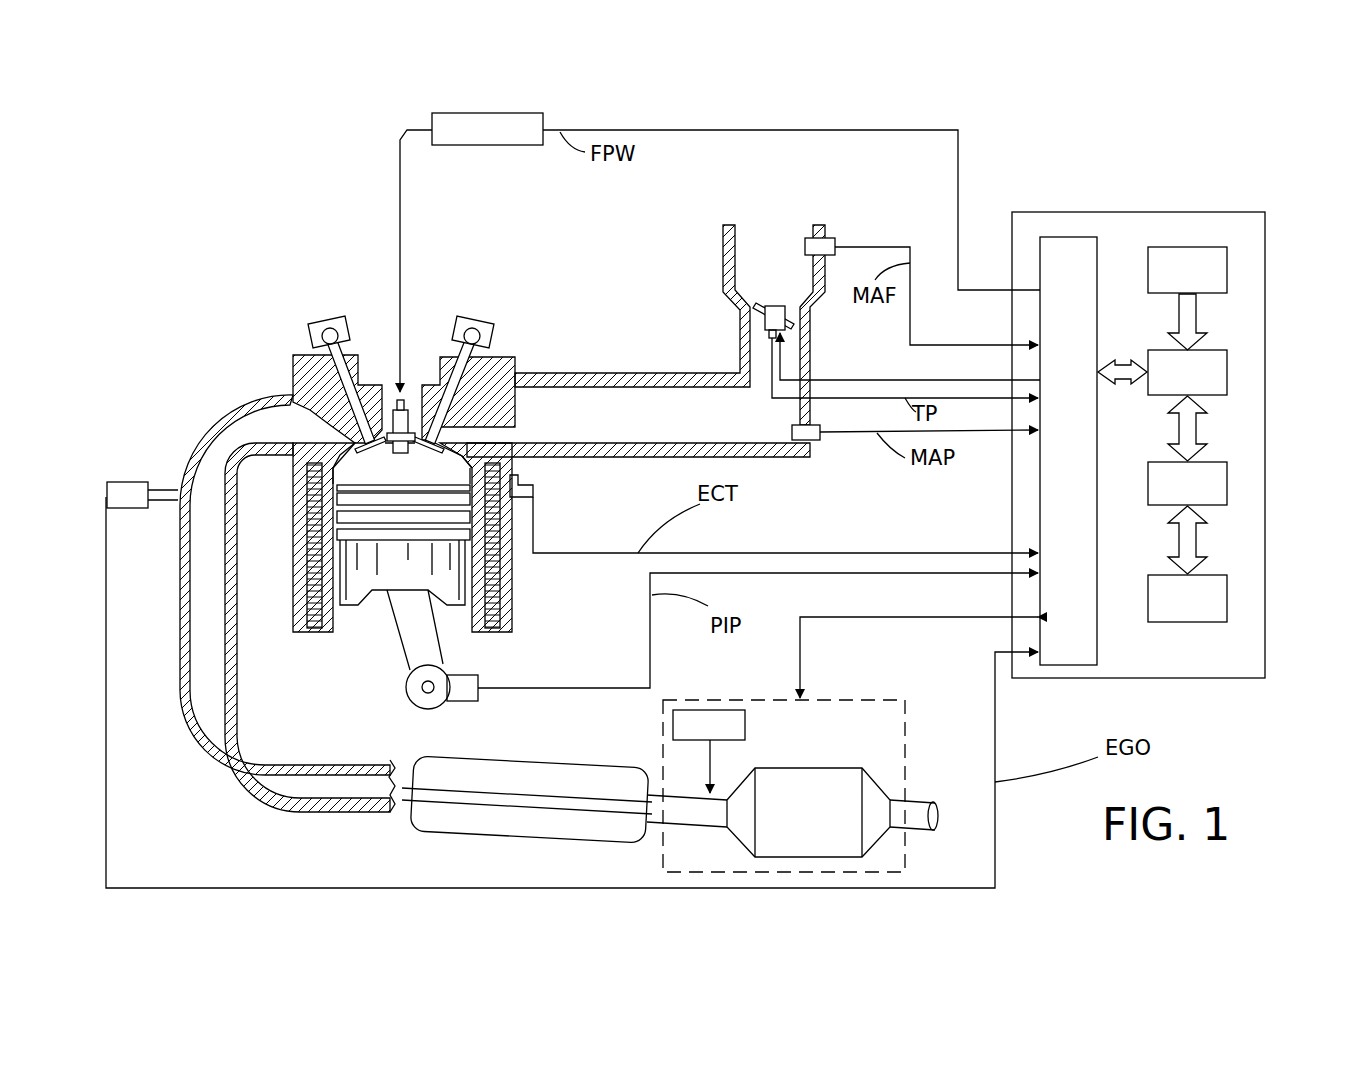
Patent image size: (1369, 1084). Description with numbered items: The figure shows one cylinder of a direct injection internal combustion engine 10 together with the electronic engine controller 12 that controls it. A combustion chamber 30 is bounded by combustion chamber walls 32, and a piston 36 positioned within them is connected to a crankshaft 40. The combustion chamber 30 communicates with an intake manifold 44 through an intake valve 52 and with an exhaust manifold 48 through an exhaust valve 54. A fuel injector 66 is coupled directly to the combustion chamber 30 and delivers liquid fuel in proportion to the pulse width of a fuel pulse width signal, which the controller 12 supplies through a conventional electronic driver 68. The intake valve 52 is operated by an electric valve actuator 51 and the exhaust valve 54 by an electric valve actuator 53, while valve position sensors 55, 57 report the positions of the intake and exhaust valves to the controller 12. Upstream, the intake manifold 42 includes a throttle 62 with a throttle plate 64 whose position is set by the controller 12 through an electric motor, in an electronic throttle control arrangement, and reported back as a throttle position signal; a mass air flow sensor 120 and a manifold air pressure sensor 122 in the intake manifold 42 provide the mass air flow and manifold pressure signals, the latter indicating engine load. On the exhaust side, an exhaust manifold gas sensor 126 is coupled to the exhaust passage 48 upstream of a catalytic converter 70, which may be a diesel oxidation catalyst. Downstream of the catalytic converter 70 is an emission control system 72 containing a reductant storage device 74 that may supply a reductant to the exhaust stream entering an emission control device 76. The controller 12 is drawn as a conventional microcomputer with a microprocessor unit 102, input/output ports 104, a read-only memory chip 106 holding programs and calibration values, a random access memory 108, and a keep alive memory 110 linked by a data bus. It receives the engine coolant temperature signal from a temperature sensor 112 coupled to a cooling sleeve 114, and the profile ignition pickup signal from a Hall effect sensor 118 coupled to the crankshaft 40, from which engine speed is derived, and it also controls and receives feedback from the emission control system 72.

The direct injection internal combustion engine 10 is at (216, 298).
The electronic engine controller 12 is at (1263, 212).
The combustion chamber 30 is at (373, 470).
The combustion chamber walls 32 is at (340, 614).
The piston 36 is at (385, 577).
The crankshaft 40 is at (416, 708).
The intake manifold 42 is at (786, 275).
The intake manifold 44 is at (716, 430).
The exhaust manifold 48 is at (270, 435).
The electric valve actuator 51 is at (462, 320).
The intake valve 52 is at (496, 424).
The electric valve actuator 53 is at (337, 322).
The exhaust valve 54 is at (370, 438).
The valve position sensor 55 is at (498, 343).
The valve position sensor 57 is at (318, 338).
The throttle 62 is at (795, 311).
The throttle plate 64 is at (746, 312).
The fuel injector 66 is at (404, 400).
The electronic driver 68 is at (520, 147).
The catalytic converter 70 is at (564, 760).
The emission control system 72 is at (828, 698).
The reductant storage device 74 is at (708, 710).
The emission control device 76 is at (838, 770).
The microprocessor unit 102 is at (1227, 368).
The input/output ports 104 is at (1097, 247).
The read-only memory chip 106 is at (1227, 268).
The random access memory 108 is at (1227, 483).
The keep alive memory 110 is at (1227, 598).
The temperature sensor 112 is at (524, 497).
The cooling sleeve 114 is at (506, 578).
The Hall effect sensor 118 is at (467, 705).
The mass air flow sensor 120 is at (833, 238).
The manifold air pressure sensor 122 is at (822, 442).
The exhaust manifold gas sensor 126 is at (107, 484).